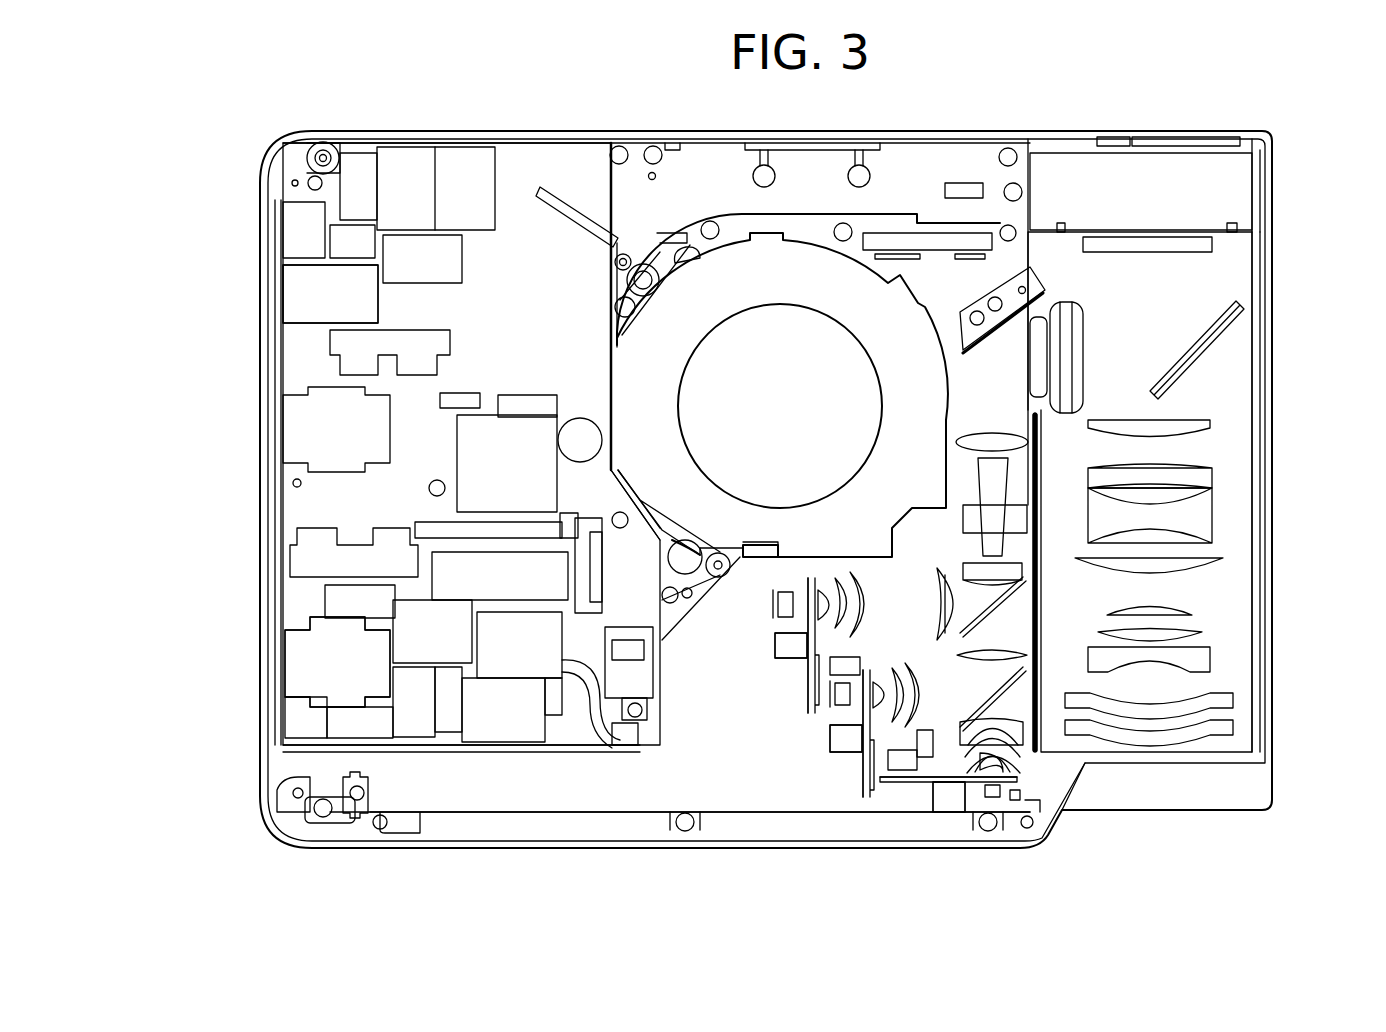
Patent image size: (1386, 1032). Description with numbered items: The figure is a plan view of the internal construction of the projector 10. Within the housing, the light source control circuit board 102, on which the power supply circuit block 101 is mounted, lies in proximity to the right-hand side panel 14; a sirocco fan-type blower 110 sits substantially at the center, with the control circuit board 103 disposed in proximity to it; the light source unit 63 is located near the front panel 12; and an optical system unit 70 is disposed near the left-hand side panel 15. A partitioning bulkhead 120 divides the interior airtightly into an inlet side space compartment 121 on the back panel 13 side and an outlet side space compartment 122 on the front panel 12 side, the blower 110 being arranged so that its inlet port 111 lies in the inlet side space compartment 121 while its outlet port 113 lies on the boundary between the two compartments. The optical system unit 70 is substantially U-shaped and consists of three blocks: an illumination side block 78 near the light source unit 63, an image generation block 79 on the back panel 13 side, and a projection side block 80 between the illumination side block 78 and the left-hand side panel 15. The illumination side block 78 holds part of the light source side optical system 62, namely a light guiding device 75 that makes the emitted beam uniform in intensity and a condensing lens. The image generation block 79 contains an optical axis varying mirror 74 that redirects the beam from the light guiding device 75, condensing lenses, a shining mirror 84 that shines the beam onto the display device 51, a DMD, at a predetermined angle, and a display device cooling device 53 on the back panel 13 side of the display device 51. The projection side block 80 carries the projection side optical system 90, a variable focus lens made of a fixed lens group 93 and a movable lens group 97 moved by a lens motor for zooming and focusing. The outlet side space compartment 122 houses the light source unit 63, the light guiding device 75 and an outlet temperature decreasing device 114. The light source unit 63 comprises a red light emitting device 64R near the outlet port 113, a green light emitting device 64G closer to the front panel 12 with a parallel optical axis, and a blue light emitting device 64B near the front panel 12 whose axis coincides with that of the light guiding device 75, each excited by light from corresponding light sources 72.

The projector 10 is at (1278, 133).
The front panel 12 is at (503, 846).
The back panel 13 is at (527, 131).
The right-hand side panel 14 is at (263, 546).
The left-hand side panel 15 is at (1273, 288).
The display device 51 is at (1165, 240).
The display device cooling device 53 is at (1067, 183).
The light source side optical system 62 is at (980, 415).
The light source unit 63 is at (830, 767).
The red light emitting device 64R is at (790, 682).
The green light emitting device 64G is at (848, 767).
The blue light emitting device 64B is at (925, 787).
The optical system unit 70 is at (1183, 492).
The light sources 72 is at (773, 607).
The optical axis varying mirror 74 is at (983, 328).
The light guiding device 75 is at (990, 465).
The illumination side block 78 is at (1017, 482).
The image generation block 79 is at (1050, 258).
The projection side block 80 is at (1222, 637).
The shining mirror 84 is at (1208, 338).
The projection side optical system 90 is at (1222, 572).
The fixed lens group 93 is at (1212, 505).
The movable lens group 97 is at (1222, 707).
The power supply circuit block 101 is at (303, 302).
The light source control circuit board 102 is at (303, 602).
The control circuit board 103 is at (641, 182).
The blower 110 is at (733, 267).
The inlet port 111 is at (790, 333).
The outlet port 113 is at (772, 558).
The outlet temperature decreasing device 114 is at (448, 822).
The partitioning bulkhead 120 is at (345, 750).
The inlet side space compartment 121 is at (703, 183).
The outlet side space compartment 122 is at (430, 778).